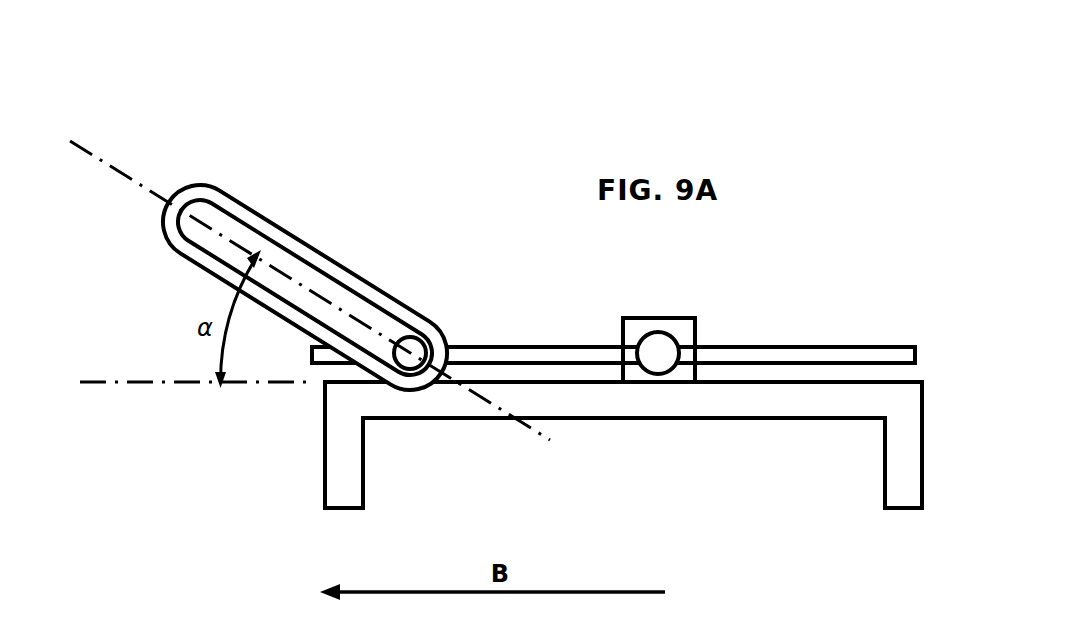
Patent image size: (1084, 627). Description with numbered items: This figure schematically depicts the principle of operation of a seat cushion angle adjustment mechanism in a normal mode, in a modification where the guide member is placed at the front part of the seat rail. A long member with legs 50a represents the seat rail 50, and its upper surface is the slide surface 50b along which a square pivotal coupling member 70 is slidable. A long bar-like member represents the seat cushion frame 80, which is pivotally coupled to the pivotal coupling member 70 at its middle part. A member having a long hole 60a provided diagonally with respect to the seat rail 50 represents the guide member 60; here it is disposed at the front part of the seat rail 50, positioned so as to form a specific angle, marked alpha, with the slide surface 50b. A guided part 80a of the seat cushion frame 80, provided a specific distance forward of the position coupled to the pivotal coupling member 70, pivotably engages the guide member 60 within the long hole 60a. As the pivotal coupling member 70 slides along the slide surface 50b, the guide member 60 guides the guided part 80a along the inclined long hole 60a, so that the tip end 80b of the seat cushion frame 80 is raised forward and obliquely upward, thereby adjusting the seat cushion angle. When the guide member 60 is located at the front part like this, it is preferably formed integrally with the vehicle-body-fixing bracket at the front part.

The seat rail 50 is at (650, 418).
The legs 50a is at (345, 510).
The slide surface 50b is at (825, 370).
The guide member 60 is at (213, 183).
The long hole 60a is at (292, 277).
The pivotal coupling member 70 is at (660, 318).
The seat cushion frame 80 is at (530, 347).
The guided part 80a is at (407, 337).
The tip end 80b is at (310, 383).